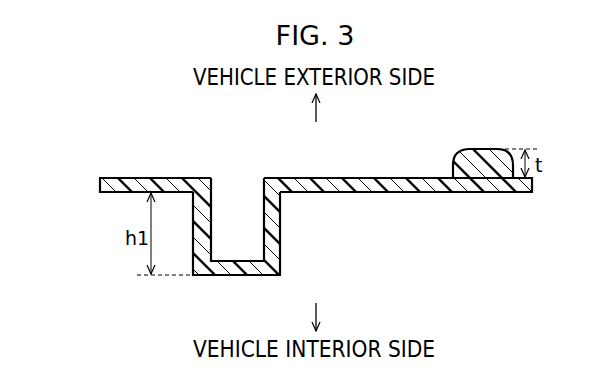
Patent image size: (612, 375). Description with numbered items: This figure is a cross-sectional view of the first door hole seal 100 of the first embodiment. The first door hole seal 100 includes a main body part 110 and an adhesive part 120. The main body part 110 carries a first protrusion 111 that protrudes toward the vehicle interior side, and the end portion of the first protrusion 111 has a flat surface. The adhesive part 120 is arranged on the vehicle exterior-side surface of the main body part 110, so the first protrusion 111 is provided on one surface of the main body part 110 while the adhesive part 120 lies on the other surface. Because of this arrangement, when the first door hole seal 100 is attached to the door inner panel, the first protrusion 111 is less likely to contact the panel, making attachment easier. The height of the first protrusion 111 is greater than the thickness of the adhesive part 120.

The first door hole seal 100 is at (76, 179).
The main body part 110 is at (152, 177).
The first protrusion 111 is at (240, 276).
The adhesive part 120 is at (484, 150).